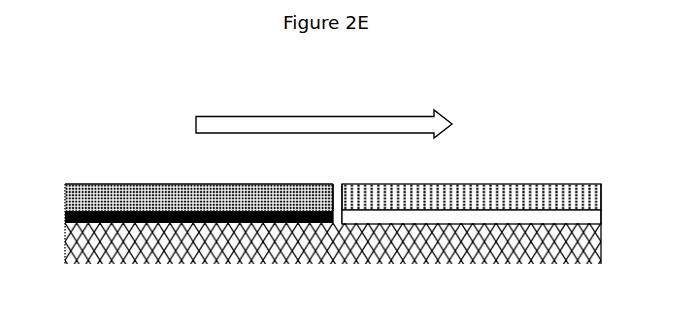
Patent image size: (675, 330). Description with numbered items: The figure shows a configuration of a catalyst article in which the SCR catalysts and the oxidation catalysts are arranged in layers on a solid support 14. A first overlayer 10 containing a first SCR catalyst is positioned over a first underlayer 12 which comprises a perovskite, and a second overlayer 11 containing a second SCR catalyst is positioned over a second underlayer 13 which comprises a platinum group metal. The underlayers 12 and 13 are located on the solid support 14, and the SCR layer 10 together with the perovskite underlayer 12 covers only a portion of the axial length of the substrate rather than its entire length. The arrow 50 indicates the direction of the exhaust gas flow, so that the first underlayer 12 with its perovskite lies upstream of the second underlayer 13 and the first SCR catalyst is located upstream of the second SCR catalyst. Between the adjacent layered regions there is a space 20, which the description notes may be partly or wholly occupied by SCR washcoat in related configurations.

The overlayer 10 is at (110, 193).
The second overlayer 11 is at (560, 197).
The first underlayer 12 is at (62, 225).
The second underlayer 13 is at (595, 223).
The solid support 14 is at (115, 247).
The gap 20 is at (336, 185).
The direction of the exhaust gas flow 50 is at (252, 123).